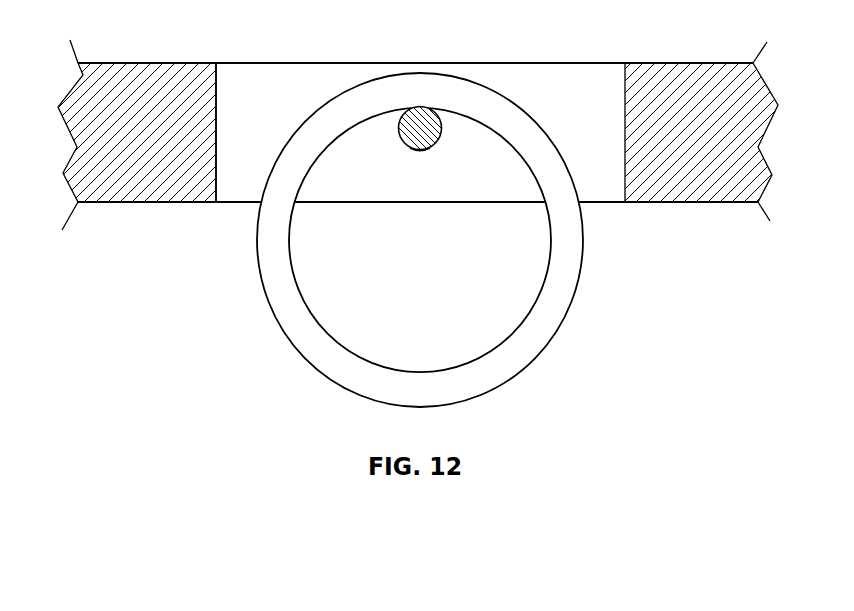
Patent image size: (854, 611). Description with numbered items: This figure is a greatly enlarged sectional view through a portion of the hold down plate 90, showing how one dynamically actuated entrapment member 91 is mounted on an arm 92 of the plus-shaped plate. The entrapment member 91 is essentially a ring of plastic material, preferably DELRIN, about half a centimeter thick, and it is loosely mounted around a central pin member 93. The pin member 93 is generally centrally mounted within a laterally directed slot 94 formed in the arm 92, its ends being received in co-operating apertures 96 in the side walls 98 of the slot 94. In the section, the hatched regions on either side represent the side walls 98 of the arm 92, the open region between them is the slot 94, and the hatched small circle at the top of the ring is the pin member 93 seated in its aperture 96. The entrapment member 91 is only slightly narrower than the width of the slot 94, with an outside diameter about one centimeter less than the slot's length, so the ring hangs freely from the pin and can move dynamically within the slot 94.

The hold down plate 90 is at (121, 62).
The dynamically actuated entrapment member 91 is at (574, 296).
The arm 92 is at (393, 62).
The central pin member 93 is at (438, 129).
The slot 94 is at (217, 88).
The aperture 96 is at (425, 150).
The side wall 98 is at (560, 82).